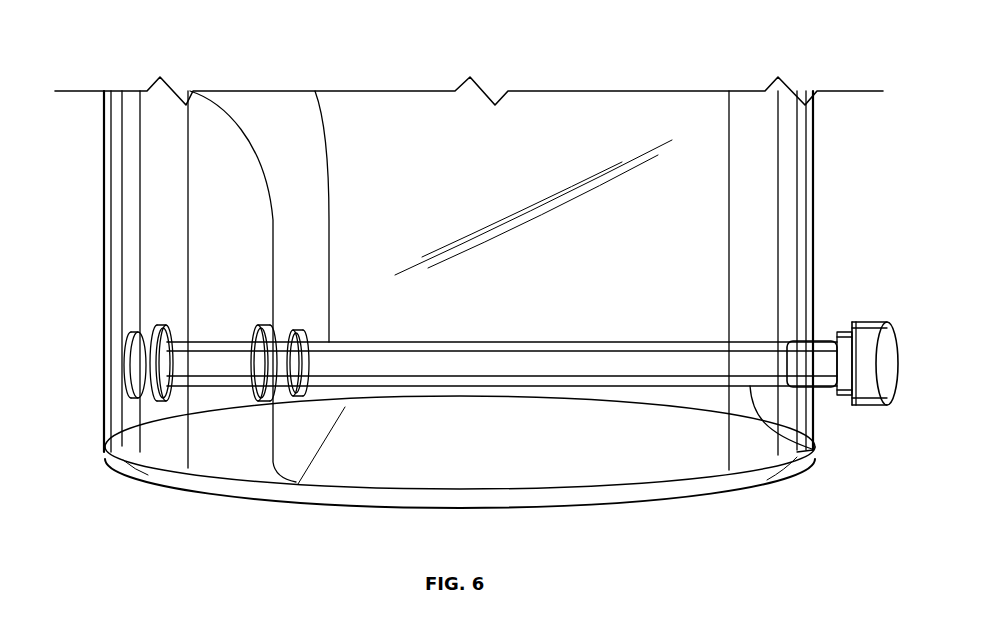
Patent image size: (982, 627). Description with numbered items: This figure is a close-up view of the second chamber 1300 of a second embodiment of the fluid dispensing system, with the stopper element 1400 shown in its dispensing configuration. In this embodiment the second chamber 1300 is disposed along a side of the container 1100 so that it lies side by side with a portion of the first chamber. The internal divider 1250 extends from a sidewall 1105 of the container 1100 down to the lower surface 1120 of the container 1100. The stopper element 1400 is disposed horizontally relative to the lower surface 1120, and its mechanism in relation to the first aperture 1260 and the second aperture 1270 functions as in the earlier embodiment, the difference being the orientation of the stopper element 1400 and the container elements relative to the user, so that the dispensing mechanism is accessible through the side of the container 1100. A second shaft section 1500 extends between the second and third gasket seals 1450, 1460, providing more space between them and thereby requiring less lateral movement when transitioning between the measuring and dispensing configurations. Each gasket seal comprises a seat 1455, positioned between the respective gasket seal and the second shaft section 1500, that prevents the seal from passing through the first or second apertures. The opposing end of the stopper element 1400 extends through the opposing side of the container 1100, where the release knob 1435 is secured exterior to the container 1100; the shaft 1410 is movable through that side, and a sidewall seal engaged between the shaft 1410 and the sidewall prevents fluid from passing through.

The container 1100 is at (813, 178).
The sidewall 1105 is at (105, 229).
The lower surface 1120 is at (672, 503).
The internal divider 1250 is at (251, 108).
The first aperture 1260 is at (297, 390).
The second aperture 1270 is at (127, 384).
The second chamber 1300 is at (567, 110).
The stopper element 1400 is at (893, 403).
The shaft 1410 is at (812, 453).
The release knob 1435 is at (885, 337).
The second gasket seal 1450 is at (275, 388).
The seat 1455 is at (136, 363).
The third gasket seal 1460 is at (113, 450).
The second shaft section 1500 is at (230, 386).